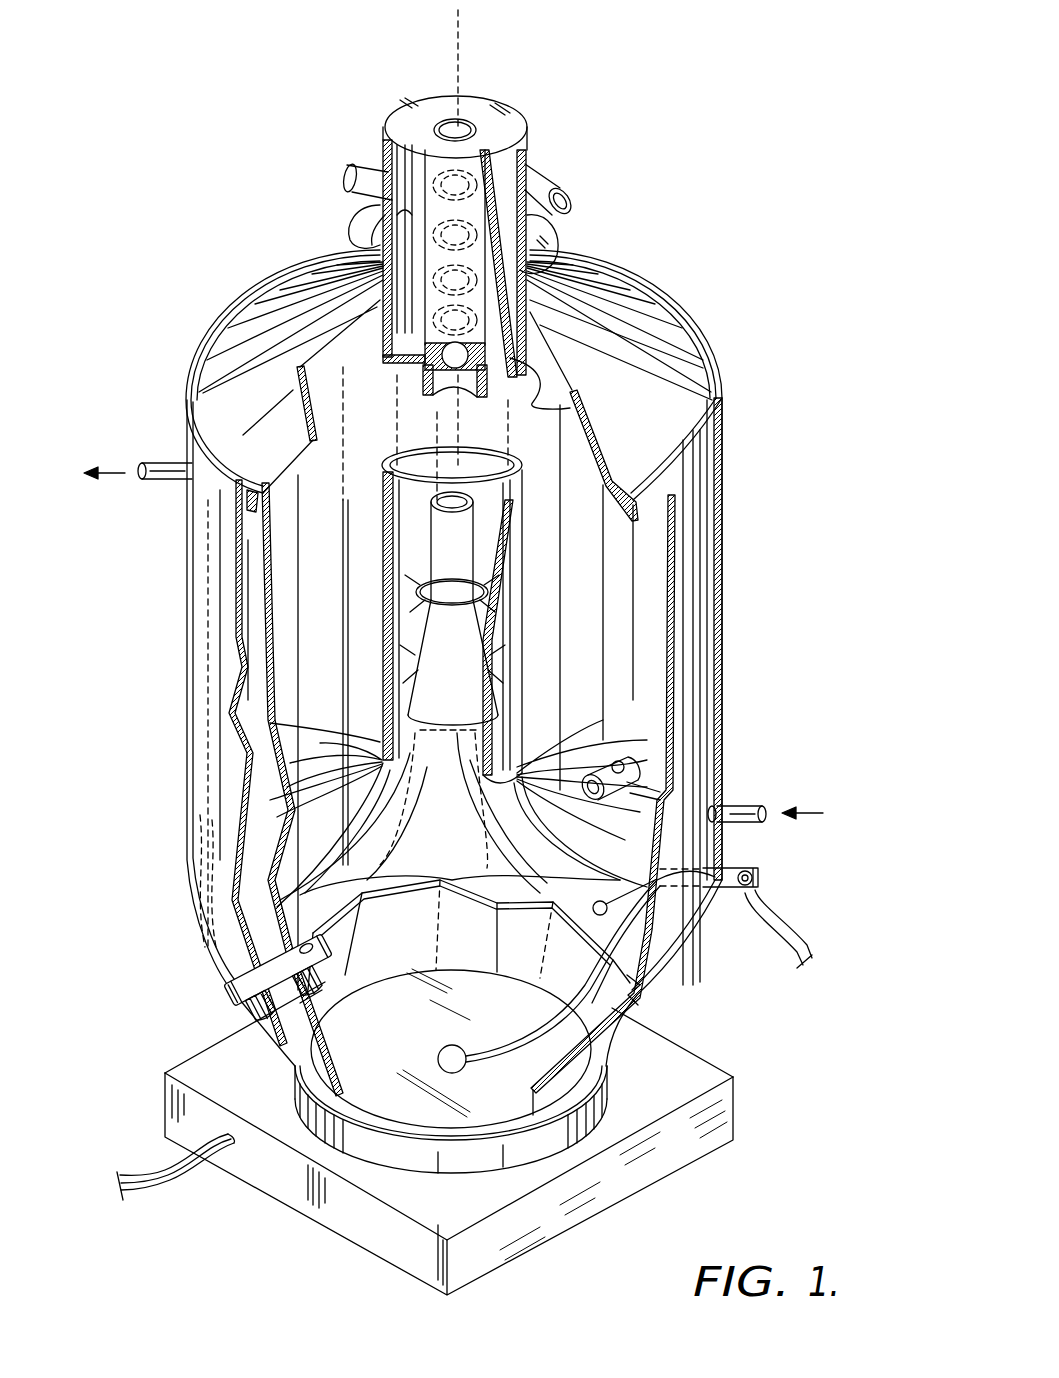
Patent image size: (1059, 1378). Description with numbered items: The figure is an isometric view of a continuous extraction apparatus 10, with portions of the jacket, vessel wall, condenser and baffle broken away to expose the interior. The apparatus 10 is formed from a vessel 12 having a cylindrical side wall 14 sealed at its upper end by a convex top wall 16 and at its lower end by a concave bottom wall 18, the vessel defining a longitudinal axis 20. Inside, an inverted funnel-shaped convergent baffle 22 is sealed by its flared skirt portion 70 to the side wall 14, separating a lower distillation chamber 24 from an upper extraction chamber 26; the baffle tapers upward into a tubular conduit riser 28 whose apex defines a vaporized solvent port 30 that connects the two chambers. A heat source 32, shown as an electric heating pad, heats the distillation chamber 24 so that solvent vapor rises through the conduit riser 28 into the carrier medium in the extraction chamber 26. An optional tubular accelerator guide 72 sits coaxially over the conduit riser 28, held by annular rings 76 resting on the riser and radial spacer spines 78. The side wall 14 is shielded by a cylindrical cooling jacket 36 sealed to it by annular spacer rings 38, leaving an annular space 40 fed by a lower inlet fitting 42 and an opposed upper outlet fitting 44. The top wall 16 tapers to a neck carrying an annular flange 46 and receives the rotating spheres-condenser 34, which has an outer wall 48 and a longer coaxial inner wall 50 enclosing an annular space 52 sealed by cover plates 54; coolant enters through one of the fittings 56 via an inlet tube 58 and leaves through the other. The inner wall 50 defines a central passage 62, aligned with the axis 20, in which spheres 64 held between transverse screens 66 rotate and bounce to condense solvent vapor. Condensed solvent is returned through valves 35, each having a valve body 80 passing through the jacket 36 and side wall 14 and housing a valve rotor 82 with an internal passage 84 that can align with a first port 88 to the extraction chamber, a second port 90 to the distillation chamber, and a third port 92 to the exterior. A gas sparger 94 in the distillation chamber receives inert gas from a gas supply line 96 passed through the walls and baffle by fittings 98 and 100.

The continuous extraction apparatus 10 is at (163, 193).
The vessel 12 is at (713, 350).
The cylindrical side wall 14 is at (674, 632).
The top wall 16 is at (590, 301).
The bottom wall 18 is at (483, 1100).
The longitudinal axis 20 is at (458, 35).
The convergent baffle 22 is at (540, 757).
The distillation chamber 24 is at (377, 1040).
The extraction chamber 26 is at (612, 592).
The conduit riser 28 is at (462, 690).
The vaporized solvent port 30 is at (435, 495).
The heat source 32 is at (707, 1127).
The rotating spheres-condenser 34 is at (540, 167).
The valves 35 is at (613, 757).
The cooling jacket 36 is at (728, 493).
The annular spacer rings 38 is at (692, 472).
The annular space 40 is at (714, 648).
The inlet fitting 42 is at (745, 824).
The outlet fitting 44 is at (167, 462).
The annular flange 46 is at (548, 243).
The outer wall 48 is at (384, 157).
The inner wall 50 is at (510, 137).
The annular space 52 is at (410, 138).
The annular cover plates 54 is at (478, 108).
The inlet and outlet fittings 56 is at (344, 178).
The inlet tube 58 is at (405, 262).
The central passage 62 is at (453, 118).
The spheres 64 is at (545, 402).
The transverse screens 66 is at (565, 312).
The skirt portion 70 is at (395, 868).
The accelerator guide 72 is at (445, 645).
The annular rings 76 is at (390, 797).
The spacer spines 78 is at (440, 722).
The valve body 80 is at (230, 977).
The valve rotor 82 is at (226, 1000).
The internal passage 84 is at (610, 787).
The first port 88 is at (645, 762).
The second port 90 is at (287, 1012).
The third port 92 is at (252, 1013).
The gas sparger 94 is at (446, 1050).
The gas supply line 96 is at (775, 932).
The fitting 98 is at (762, 877).
The fitting 100 is at (668, 975).